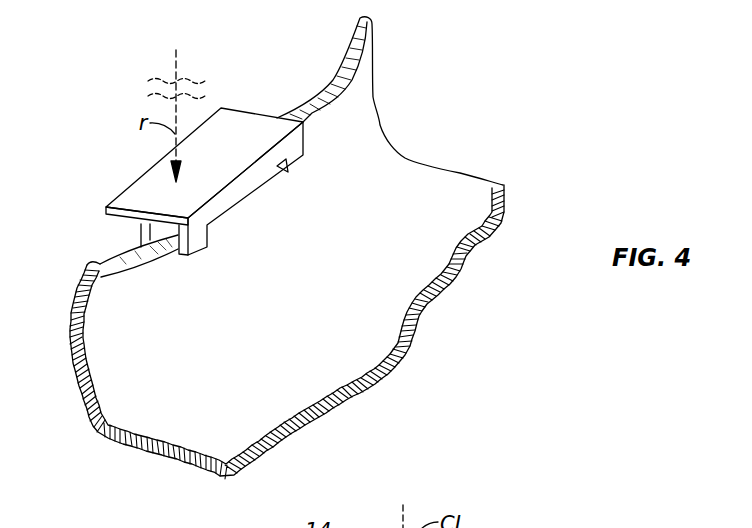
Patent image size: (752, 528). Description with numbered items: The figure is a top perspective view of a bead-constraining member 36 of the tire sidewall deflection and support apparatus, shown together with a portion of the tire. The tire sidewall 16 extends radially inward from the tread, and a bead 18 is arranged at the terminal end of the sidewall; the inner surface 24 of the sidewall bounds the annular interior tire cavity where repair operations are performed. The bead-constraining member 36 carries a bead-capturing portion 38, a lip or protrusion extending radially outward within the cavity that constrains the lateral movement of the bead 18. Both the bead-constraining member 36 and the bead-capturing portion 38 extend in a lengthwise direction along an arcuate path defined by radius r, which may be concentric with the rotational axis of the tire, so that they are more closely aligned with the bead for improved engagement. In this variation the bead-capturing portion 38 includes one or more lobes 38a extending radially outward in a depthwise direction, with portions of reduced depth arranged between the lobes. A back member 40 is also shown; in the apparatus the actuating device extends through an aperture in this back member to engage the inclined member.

The sidewall 16 is at (70, 338).
The bead 18 is at (85, 270).
The inner surface 24 is at (427, 250).
The bead-constraining member 36 is at (150, 193).
The bead-capturing portion 38 is at (250, 183).
The lobes 38a is at (303, 150).
The back member 40 is at (140, 234).